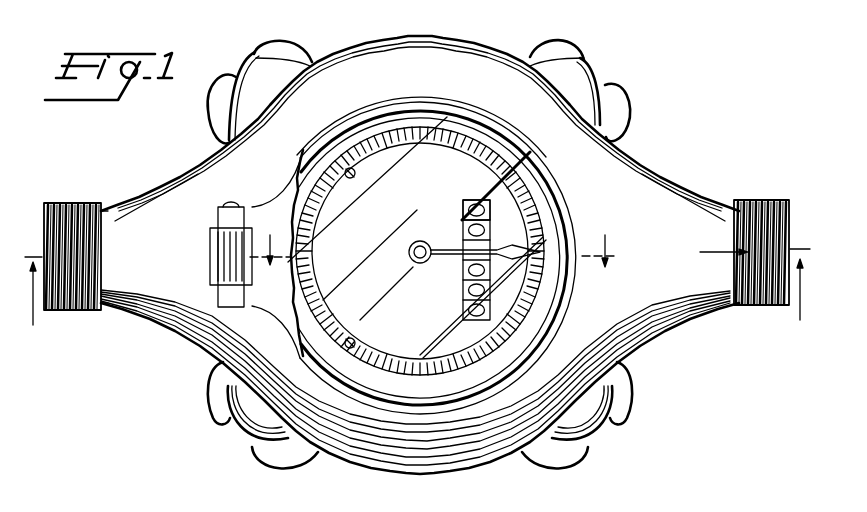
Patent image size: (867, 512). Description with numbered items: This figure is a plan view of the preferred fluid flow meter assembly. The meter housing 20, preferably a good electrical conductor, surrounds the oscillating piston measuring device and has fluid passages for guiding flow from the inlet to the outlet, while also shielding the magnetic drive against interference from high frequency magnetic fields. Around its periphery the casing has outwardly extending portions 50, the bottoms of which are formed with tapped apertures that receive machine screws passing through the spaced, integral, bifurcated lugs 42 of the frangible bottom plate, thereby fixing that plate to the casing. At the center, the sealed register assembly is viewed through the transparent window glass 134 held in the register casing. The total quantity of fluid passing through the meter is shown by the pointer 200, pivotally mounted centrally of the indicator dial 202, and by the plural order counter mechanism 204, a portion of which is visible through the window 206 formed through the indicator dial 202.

The meter housing 20 is at (665, 170).
The bifurcated lugs 42 is at (300, 52).
The outwardly extending portions 50 is at (237, 77).
The transparent window glass 134 is at (434, 191).
The pointer 200 is at (462, 248).
The indicator dial 202 is at (433, 128).
The plural order counter mechanism 204 is at (466, 287).
The window 206 is at (464, 216).